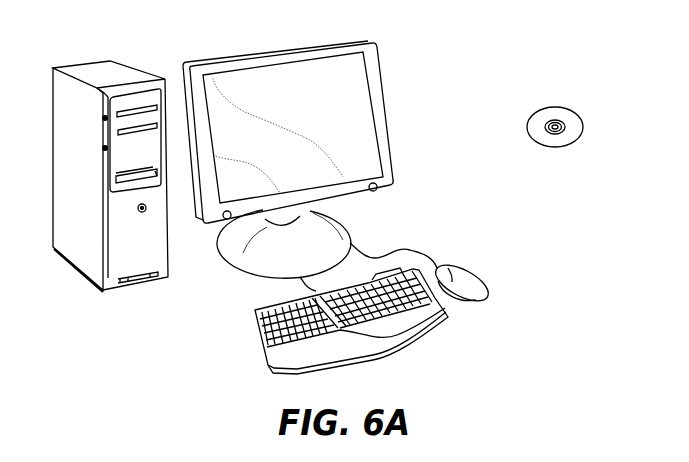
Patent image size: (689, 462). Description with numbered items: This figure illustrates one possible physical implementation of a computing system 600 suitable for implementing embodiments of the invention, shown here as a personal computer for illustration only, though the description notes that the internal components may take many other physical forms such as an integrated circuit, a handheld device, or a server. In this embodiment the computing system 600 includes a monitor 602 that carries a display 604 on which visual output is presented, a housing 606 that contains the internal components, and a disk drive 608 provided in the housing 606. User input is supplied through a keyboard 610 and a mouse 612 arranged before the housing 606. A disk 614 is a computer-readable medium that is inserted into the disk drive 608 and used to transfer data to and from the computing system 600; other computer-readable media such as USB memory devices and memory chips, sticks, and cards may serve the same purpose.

The computing system 600 is at (486, 34).
The monitor 602 is at (387, 133).
The display 604 is at (350, 78).
The housing 606 is at (98, 70).
The disk drive 608 is at (153, 170).
The keyboard 610 is at (258, 347).
The mouse 612 is at (481, 272).
The disk 614 is at (570, 108).